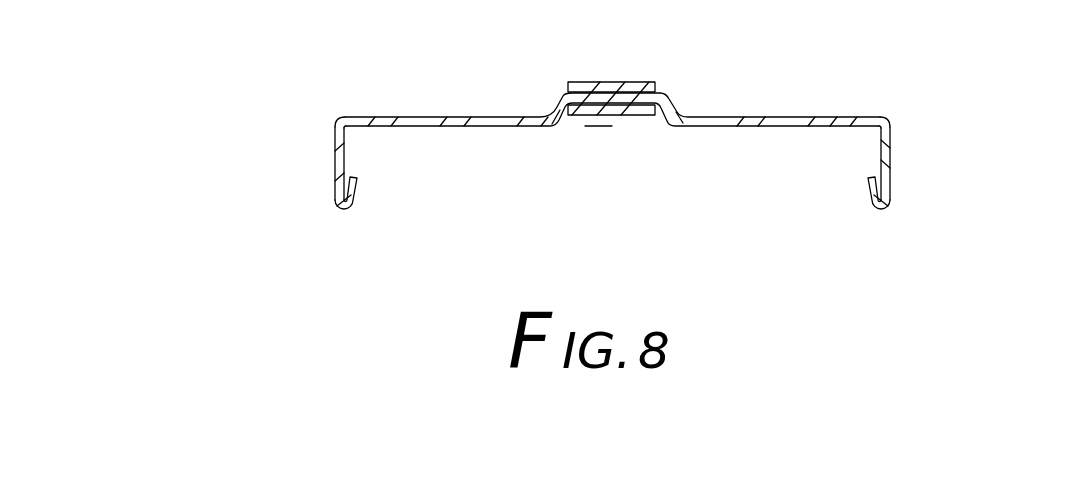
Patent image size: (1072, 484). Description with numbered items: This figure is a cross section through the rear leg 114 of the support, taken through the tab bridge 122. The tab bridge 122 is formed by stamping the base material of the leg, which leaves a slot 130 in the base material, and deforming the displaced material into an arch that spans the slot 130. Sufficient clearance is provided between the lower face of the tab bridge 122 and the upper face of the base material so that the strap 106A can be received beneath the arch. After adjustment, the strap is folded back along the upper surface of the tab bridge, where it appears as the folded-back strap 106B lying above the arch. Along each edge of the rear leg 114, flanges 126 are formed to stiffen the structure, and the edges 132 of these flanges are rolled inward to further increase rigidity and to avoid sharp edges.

The rear leg 114 is at (612, 161).
The tab bridge 122 is at (550, 83).
The strap 106A is at (686, 91).
The strap folded back 106B is at (674, 58).
The slot 130 is at (637, 160).
The flanges 126 is at (612, 187).
The edges 132 is at (612, 212).